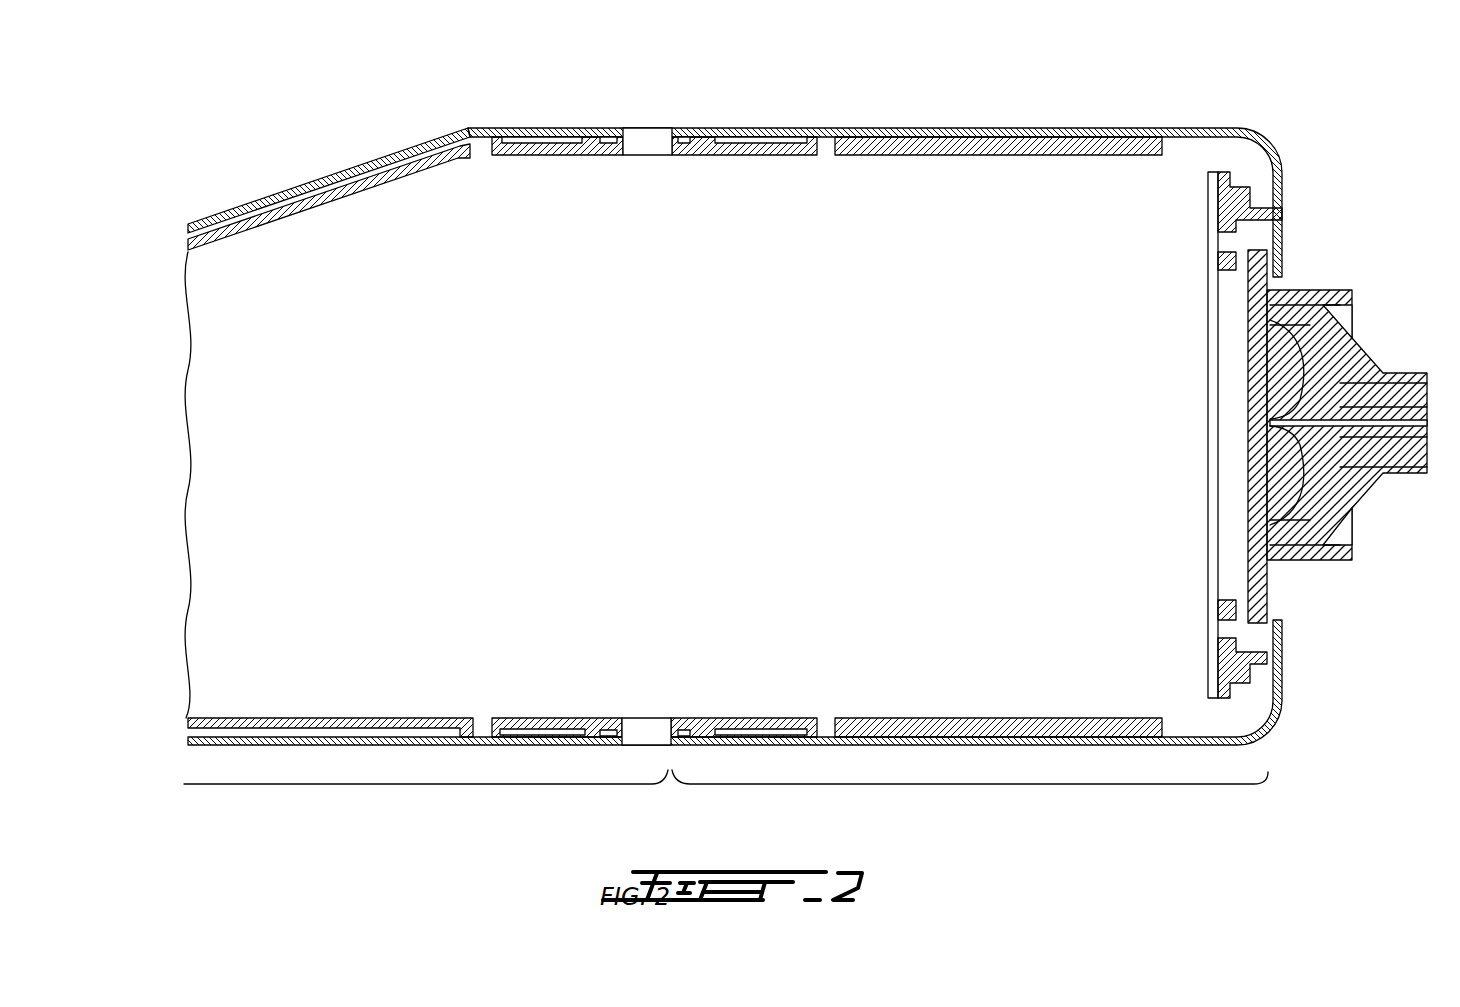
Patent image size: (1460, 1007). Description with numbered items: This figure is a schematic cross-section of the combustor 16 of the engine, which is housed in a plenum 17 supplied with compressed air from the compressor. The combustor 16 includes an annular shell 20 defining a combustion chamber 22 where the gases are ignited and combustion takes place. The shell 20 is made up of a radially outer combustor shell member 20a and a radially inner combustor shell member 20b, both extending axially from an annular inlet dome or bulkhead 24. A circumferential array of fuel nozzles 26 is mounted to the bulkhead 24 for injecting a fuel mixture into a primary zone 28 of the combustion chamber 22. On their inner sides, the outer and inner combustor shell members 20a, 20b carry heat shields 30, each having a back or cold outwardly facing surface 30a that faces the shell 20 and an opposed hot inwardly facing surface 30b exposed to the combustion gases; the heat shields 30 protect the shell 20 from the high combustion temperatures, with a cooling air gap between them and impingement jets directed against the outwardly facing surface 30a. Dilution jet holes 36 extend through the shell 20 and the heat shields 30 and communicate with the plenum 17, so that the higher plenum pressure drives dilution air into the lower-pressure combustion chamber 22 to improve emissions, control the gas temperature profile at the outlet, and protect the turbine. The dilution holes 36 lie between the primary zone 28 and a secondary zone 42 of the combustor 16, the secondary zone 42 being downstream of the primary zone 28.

The combustor 16 is at (1296, 126).
The plenum 17 is at (750, 22).
The annular shell 20 is at (685, 407).
The radially outer combustor shell member 20a is at (327, 176).
The radially inner combustor shell member 20b is at (208, 742).
The combustion chamber 22 is at (1040, 450).
The annular inlet dome 24 is at (1282, 216).
The fuel nozzle 26 is at (1350, 344).
The primary zone 28 is at (970, 801).
The heat shield 30 is at (675, 402).
The outwardly facing surface 30a is at (742, 138).
The second opening of liner 30b is at (758, 160).
The dilution jet holes 36 is at (651, 138).
The secondary zone 42 is at (426, 801).